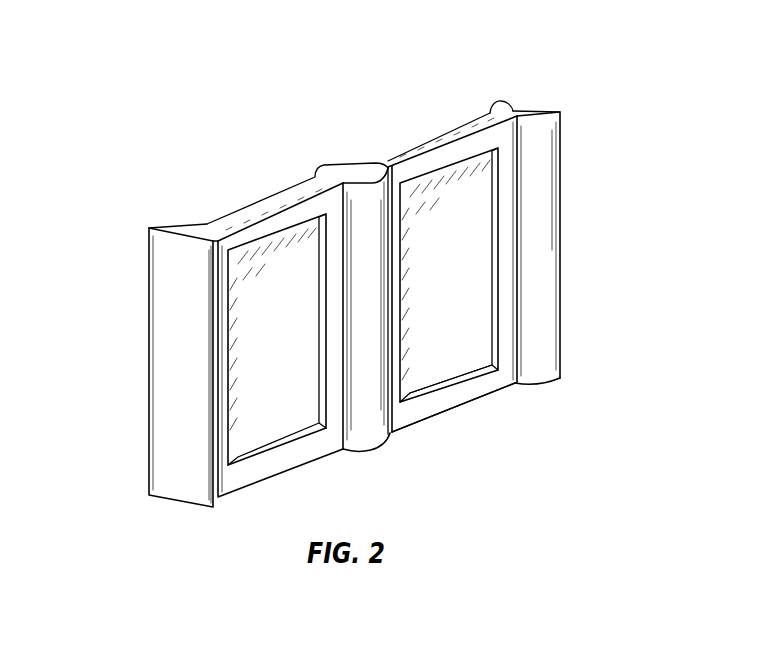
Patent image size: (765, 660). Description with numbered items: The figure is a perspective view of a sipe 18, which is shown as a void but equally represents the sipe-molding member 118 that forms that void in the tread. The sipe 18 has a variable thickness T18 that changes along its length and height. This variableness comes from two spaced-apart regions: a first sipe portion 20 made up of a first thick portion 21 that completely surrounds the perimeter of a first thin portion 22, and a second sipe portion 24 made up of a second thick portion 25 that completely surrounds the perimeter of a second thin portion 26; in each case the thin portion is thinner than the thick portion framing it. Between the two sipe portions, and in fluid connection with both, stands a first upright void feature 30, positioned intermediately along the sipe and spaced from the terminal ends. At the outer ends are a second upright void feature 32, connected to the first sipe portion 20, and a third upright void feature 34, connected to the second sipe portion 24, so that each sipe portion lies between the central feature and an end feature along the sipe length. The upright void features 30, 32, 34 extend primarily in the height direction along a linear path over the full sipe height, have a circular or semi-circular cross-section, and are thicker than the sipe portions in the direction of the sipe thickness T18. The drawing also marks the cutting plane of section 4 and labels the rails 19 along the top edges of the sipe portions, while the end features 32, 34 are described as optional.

The connector body 18 is at (311, 290).
The connector body (alternate embodiment) 118 is at (354, 290).
The rails 19 is at (384, 153).
The first panel 20 is at (267, 192).
The window frame members 21 is at (270, 222).
The first window opening 22 is at (288, 413).
The second flange 24 is at (461, 116).
The frame bottom member 25 is at (477, 384).
The second window opening 26 is at (462, 351).
The central connector 30 is at (353, 172).
The first flange 32 is at (206, 240).
The bump 34 is at (519, 112).
The section line 4- 4 is at (124, 388).
The thickness dimension T18 is at (562, 112).